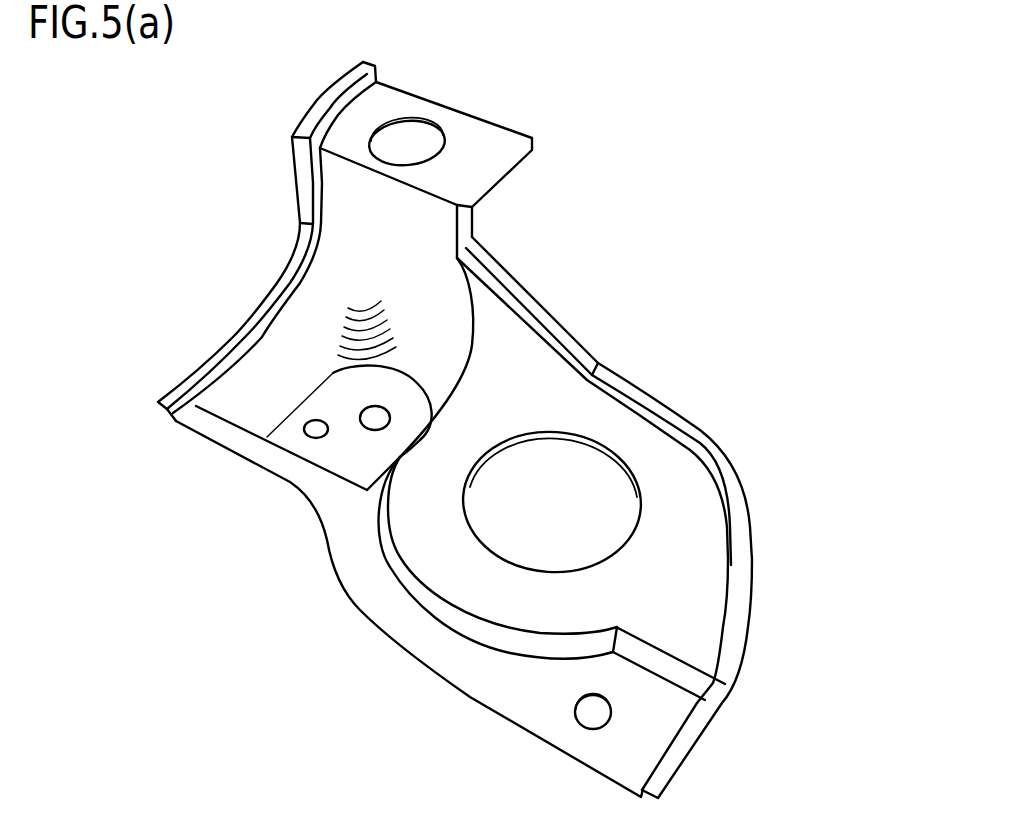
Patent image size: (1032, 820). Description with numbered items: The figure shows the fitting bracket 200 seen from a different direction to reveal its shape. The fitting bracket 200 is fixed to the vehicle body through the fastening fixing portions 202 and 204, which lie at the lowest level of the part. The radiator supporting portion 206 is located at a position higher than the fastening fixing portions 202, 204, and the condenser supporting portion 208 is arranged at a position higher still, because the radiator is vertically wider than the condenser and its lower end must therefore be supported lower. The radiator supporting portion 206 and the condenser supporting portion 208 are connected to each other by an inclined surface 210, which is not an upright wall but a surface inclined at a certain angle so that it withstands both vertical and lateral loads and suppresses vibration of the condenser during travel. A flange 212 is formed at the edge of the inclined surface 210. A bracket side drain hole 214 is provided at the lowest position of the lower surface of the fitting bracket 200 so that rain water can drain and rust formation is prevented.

The fitting bracket 200 is at (692, 364).
The fastening fixing portion 202 is at (576, 712).
The fastening fixing portion 204 is at (360, 425).
The radiator supporting portion 206 is at (642, 500).
The condenser supporting portion 208 is at (433, 123).
The inclined surface 210 is at (383, 287).
The flange 212 is at (297, 193).
The bracket side drain hole 214 is at (304, 421).